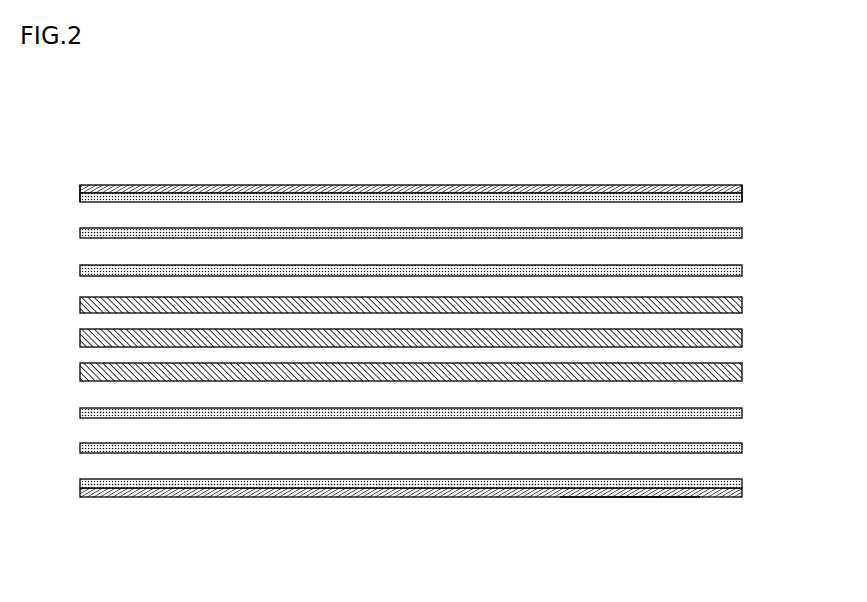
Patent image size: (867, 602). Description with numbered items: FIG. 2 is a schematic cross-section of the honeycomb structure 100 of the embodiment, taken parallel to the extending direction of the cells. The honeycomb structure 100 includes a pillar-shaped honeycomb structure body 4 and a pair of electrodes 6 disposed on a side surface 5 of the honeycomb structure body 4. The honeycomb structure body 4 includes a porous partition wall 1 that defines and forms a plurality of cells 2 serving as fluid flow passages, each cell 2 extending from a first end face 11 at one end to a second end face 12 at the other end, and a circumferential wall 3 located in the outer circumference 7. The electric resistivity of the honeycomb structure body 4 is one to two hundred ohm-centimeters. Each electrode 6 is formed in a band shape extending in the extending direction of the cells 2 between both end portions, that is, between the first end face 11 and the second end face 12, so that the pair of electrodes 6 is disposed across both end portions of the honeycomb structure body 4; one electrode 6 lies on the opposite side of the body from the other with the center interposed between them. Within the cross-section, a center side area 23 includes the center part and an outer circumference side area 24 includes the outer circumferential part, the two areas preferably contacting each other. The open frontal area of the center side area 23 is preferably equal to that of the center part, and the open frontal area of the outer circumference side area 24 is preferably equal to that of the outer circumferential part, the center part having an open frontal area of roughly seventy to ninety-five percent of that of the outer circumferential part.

The honeycomb structure 100 is at (728, 86).
The cell 2 is at (130, 288).
The partition wall 1 is at (378, 455).
The circumferential wall 3 is at (510, 497).
The honeycomb structure body 4 is at (188, 186).
The side surface 5 is at (608, 497).
The electrode 6 is at (318, 181).
The outer circumference 7 is at (640, 497).
The first end face 11 is at (80, 199).
The second end face 12 is at (742, 190).
The center side area 23 is at (748, 295).
The outer circumference side area 24 is at (748, 197).